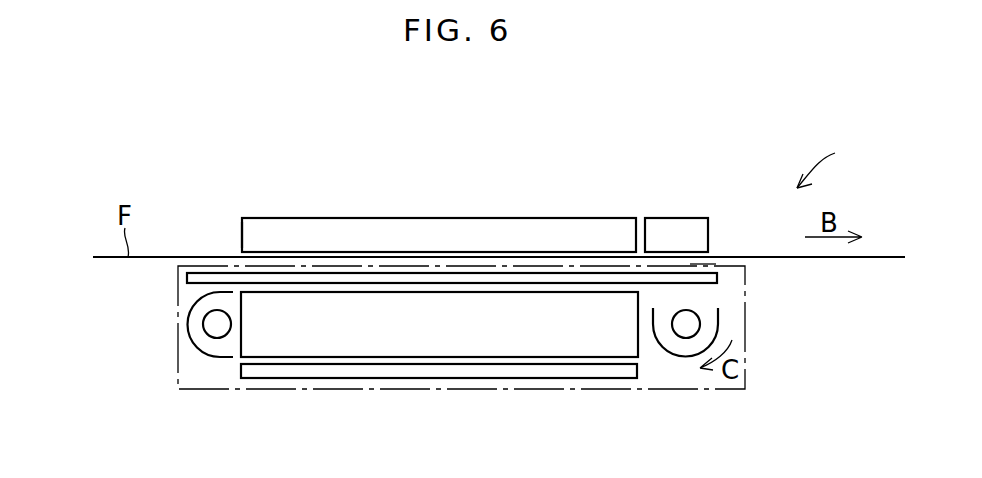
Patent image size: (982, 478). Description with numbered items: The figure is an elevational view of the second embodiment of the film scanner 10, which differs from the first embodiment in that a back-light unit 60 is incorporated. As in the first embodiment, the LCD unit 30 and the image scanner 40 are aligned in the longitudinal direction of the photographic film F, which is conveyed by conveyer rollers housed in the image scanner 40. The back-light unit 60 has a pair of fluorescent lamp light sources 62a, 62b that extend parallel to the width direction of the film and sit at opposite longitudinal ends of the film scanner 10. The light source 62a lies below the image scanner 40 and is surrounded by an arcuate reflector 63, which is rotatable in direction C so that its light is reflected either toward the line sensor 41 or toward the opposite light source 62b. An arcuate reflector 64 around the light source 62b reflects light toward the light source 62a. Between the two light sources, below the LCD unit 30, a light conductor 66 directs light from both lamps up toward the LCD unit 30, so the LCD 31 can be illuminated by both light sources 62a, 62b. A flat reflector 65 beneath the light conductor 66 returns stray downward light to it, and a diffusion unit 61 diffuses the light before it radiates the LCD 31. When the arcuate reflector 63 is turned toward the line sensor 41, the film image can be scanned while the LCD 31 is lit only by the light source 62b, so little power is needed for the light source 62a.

The film scanner 10 is at (834, 162).
The LCD unit 30 is at (242, 232).
The LCD 31 is at (442, 218).
The image scanner 40 is at (678, 218).
The line sensor 41 is at (698, 265).
The back-light unit 60 is at (750, 286).
The diffusion unit 61 is at (203, 277).
The light source 62a is at (687, 325).
The light source 62b is at (215, 322).
The arcuate reflector 63 is at (688, 355).
The arcuate reflector 64 is at (200, 352).
The flat reflector 65 is at (335, 370).
The light conductor 66 is at (493, 335).